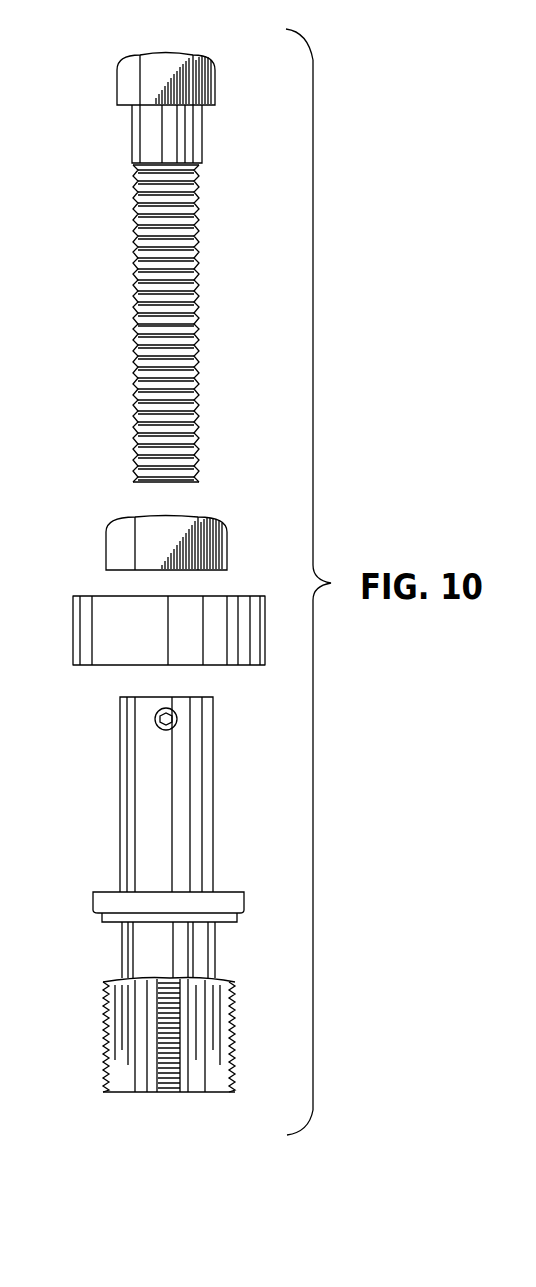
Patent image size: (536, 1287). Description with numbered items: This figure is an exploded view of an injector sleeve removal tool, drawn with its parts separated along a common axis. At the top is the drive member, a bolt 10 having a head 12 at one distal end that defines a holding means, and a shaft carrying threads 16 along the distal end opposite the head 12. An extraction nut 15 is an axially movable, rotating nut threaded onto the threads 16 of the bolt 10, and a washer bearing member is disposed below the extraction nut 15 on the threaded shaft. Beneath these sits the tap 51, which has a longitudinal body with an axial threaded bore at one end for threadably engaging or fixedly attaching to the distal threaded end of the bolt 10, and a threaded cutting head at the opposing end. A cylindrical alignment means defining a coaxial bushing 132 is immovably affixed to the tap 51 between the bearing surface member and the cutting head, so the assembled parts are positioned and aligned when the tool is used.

The bolt 10 is at (133, 120).
The head 12 is at (125, 65).
The threads 16 is at (133, 195).
The extraction nut 15 is at (113, 545).
The tap 51 is at (140, 797).
The coaxial bushing 132 is at (110, 900).